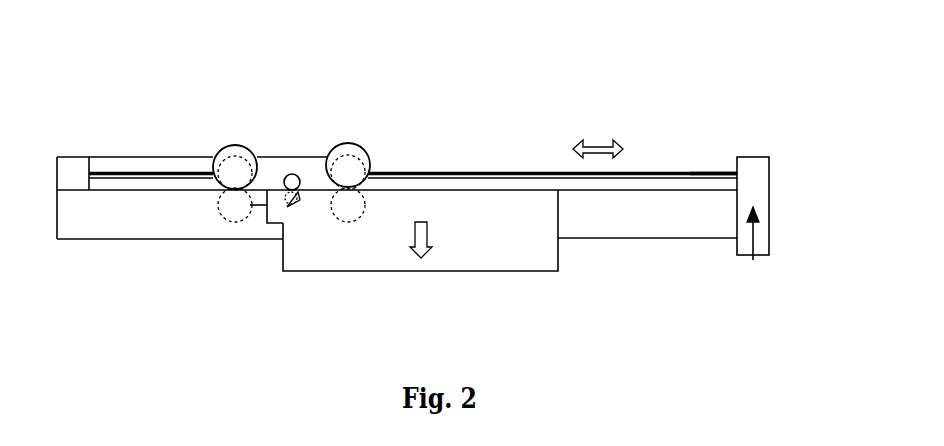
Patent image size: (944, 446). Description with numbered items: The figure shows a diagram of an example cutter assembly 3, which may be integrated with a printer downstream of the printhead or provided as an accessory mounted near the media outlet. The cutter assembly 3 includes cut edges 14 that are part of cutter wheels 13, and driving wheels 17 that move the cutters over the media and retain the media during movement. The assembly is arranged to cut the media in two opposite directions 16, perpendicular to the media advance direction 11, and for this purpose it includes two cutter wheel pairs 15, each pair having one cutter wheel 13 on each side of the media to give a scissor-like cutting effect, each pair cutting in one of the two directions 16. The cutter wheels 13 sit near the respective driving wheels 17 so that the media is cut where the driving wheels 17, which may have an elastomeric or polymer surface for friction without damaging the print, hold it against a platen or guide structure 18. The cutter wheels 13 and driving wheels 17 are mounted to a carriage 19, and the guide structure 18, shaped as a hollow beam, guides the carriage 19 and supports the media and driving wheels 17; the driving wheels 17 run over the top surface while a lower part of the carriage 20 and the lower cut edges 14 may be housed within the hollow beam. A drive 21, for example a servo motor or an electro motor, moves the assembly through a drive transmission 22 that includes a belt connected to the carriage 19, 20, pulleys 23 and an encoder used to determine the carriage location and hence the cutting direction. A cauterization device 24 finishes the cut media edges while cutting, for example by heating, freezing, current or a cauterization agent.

The cutter assembly 3 is at (527, 243).
The media advance direction 11 is at (412, 248).
The cutter wheels 13 is at (217, 153).
The cut edges 14 is at (238, 173).
The cutter wheel pairs 15 is at (200, 184).
The cutting directions 16 is at (600, 143).
The driving wheels 17 is at (322, 190).
The guide structure 18 is at (678, 225).
The carriage 19 is at (271, 168).
The lower part of the carriage 20 is at (272, 210).
The drive 21 is at (72, 178).
The drive transmission 22 is at (703, 170).
The pulleys 23 is at (752, 170).
The cauterization device 24 is at (292, 174).